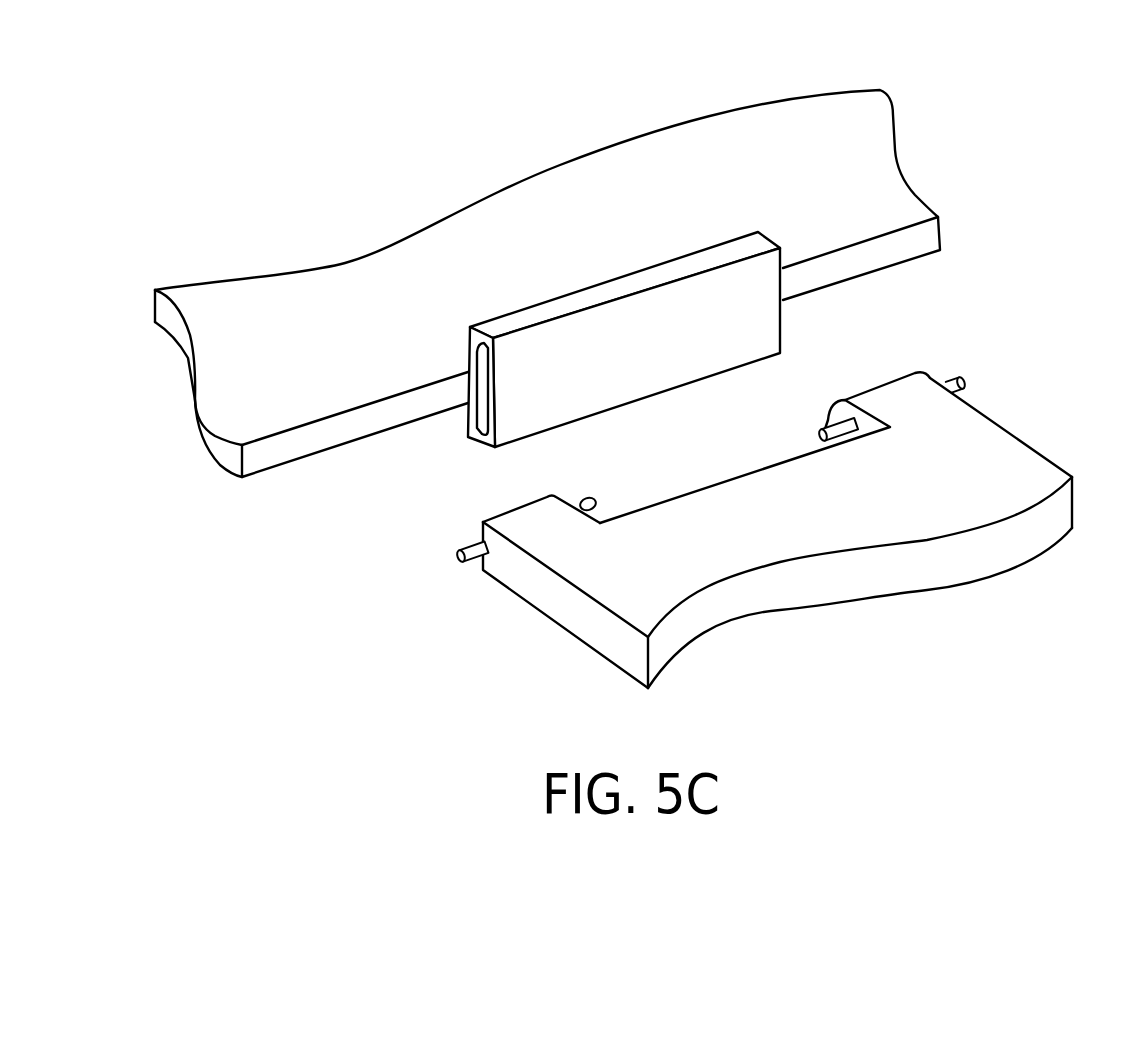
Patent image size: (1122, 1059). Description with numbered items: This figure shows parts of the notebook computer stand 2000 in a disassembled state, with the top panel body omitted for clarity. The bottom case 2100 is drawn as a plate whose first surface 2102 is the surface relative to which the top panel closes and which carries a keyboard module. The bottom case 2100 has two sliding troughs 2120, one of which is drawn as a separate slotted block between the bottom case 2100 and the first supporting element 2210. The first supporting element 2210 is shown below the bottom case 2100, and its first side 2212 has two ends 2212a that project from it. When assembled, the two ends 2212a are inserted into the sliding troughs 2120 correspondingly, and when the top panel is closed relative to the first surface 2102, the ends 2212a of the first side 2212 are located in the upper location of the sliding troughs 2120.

The notebook computer stand 2000 is at (1085, 703).
The bottom case 2100 is at (547, 326).
The first surface 2102 is at (273, 338).
The sliding troughs 2120 is at (483, 418).
The first supporting element 2210 is at (764, 485).
The first side 2212 is at (907, 388).
The ends 2212a is at (587, 498).